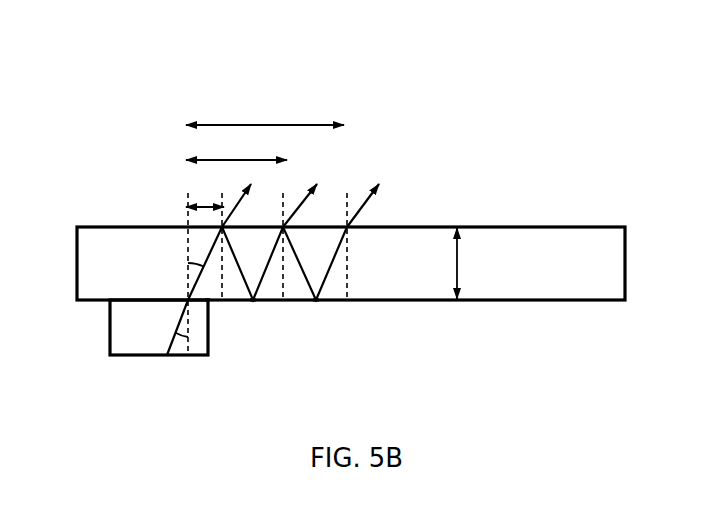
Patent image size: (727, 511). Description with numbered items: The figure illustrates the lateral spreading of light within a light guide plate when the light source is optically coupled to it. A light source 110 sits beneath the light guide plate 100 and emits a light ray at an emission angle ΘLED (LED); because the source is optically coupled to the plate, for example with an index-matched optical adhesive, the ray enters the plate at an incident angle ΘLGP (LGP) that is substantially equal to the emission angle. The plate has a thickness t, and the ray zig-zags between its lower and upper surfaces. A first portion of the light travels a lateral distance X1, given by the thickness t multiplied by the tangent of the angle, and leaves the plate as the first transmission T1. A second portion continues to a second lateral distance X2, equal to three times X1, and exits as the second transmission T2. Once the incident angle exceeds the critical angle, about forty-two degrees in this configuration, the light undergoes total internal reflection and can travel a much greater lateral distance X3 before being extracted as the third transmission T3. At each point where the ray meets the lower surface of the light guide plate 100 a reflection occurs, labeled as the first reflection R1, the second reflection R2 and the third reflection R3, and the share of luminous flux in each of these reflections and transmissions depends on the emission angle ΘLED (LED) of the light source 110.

The light guide plate (LGP) 100 is at (576, 280).
The light source 110 is at (110, 322).
The first transmission T1 is at (247, 197).
The second transmission T2 is at (313, 196).
The third transmission T3 is at (377, 196).
The first reflection R1 is at (207, 302).
The second reflection R2 is at (255, 302).
The third reflection R3 is at (318, 302).
The first lateral distance X1 is at (205, 191).
The second lateral distance X2 is at (236, 146).
The third lateral distance X3 is at (265, 111).
The thickness of the LGP t is at (466, 263).
The incident angle Θ LGP is at (171, 274).
The emission angle Θ LED is at (157, 323).